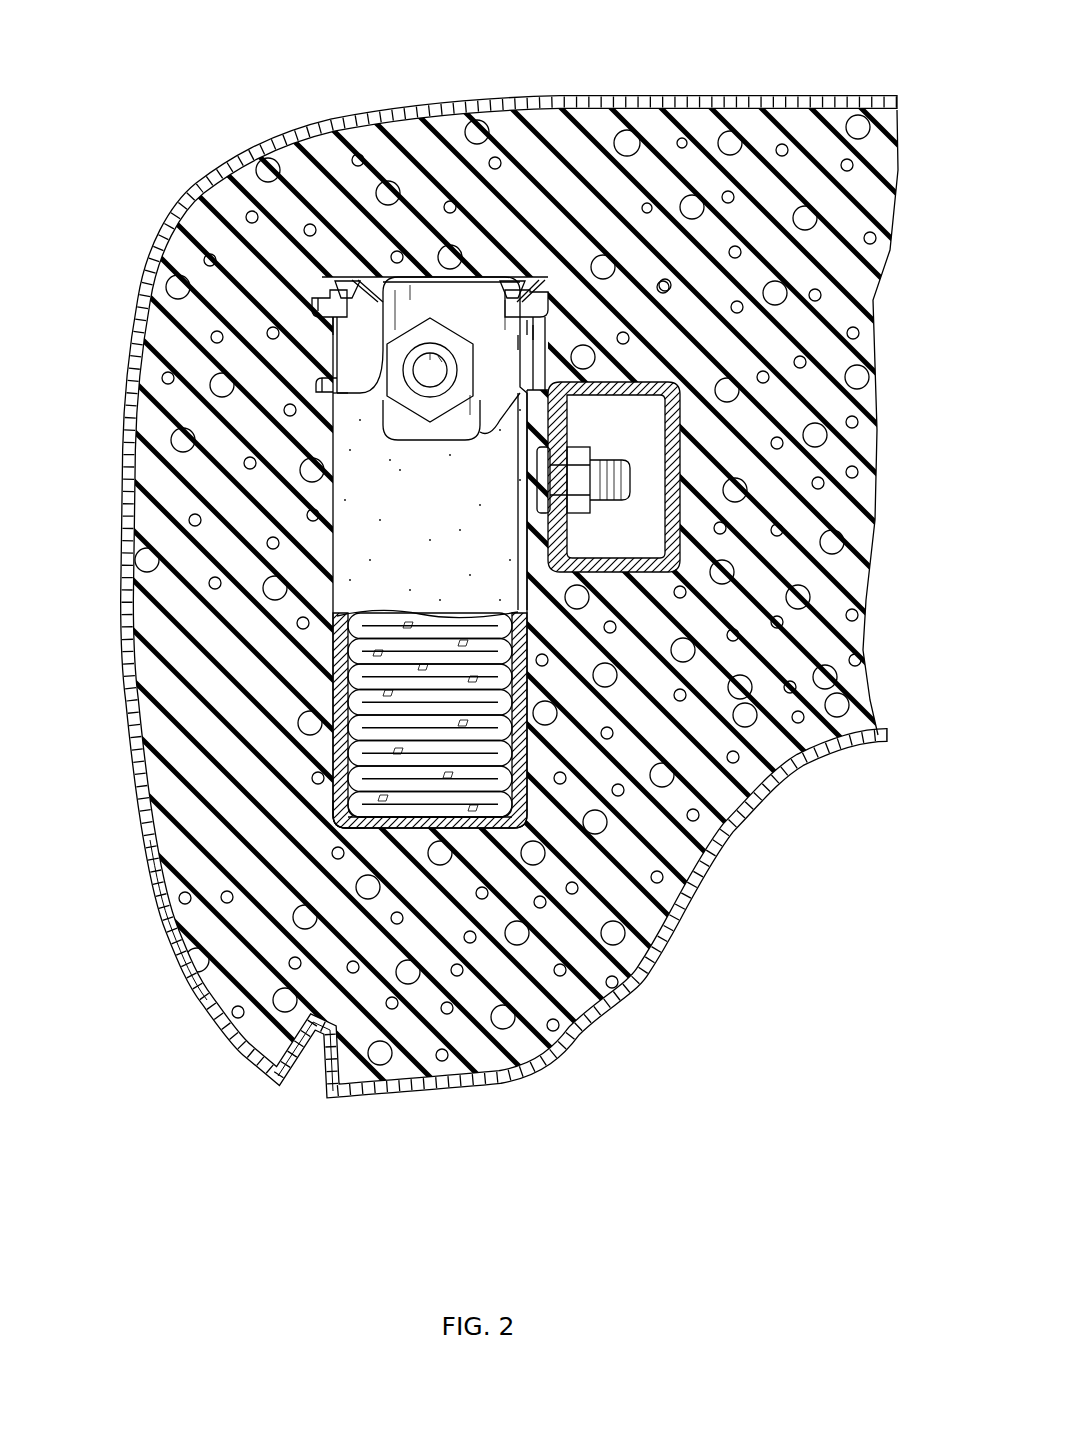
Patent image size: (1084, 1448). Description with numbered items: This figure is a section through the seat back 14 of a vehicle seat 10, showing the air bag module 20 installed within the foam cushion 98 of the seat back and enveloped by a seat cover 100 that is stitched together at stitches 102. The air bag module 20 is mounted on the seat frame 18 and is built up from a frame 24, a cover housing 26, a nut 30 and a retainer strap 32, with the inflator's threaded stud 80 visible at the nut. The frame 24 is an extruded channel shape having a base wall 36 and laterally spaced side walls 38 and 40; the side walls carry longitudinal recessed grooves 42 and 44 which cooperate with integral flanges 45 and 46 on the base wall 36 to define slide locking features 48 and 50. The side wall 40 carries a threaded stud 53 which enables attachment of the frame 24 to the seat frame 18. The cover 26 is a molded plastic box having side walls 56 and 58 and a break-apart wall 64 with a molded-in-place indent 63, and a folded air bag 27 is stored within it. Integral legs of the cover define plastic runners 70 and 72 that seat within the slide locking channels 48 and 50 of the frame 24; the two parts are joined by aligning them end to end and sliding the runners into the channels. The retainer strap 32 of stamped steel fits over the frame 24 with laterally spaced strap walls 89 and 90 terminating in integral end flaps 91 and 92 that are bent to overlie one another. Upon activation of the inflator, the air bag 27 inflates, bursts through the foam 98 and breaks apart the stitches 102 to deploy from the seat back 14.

The vehicle seat 10 is at (542, 724).
The seat back 14 is at (497, 593).
The seat frame 18 is at (739, 477).
The air bag module 20 is at (364, 485).
The frame 24 is at (347, 274).
The cover housing 26 is at (347, 493).
The air bag 27 is at (289, 713).
The nut 30 is at (315, 398).
The retainer strap 32 is at (321, 327).
The base wall 36 is at (502, 275).
The side wall 38 is at (335, 420).
The side wall 40 is at (552, 382).
The recessed groove 42 is at (318, 390).
The recessed groove 44 is at (532, 330).
The integral flange 45 is at (344, 296).
The integral flange 46 is at (522, 282).
The slide locking feature 48 is at (309, 291).
The slide locking feature 50 is at (548, 287).
The threaded stud 53 is at (620, 468).
The side wall 56 is at (342, 694).
The side wall 58 is at (522, 702).
The indent 63 is at (440, 812).
The break-apart wall 64 is at (350, 838).
The plastic runner 70 is at (317, 309).
The plastic runner 72 is at (560, 300).
The threaded stud 80 is at (441, 372).
The strap wall 89 is at (272, 416).
The strap wall 90 is at (522, 342).
The end flap 91 is at (370, 308).
The end flap 92 is at (470, 290).
The foam cushion 98 is at (415, 1037).
The seat cover 100 is at (162, 950).
The stitches 102 is at (313, 1030).